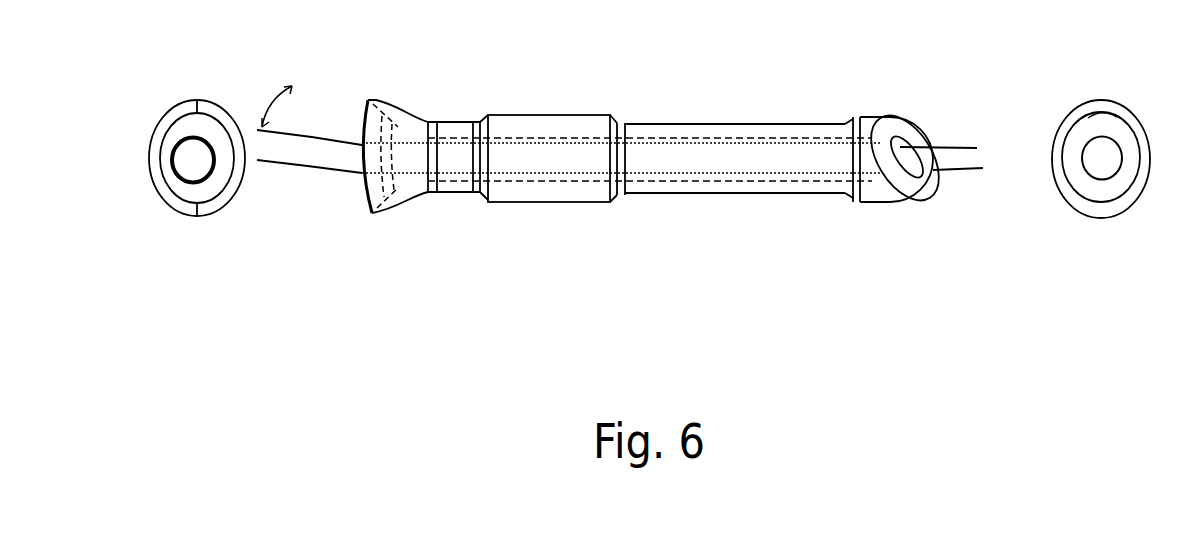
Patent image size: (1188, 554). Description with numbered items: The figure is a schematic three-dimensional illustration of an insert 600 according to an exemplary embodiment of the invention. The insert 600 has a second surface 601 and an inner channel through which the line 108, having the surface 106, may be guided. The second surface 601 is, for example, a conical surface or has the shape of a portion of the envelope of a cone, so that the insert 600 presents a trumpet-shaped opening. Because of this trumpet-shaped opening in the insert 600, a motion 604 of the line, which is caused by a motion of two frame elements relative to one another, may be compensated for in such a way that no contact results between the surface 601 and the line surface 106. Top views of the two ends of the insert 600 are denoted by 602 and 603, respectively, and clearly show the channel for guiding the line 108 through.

The insert 600 is at (720, 124).
The second surface 601 is at (394, 117).
The top view of one end of the insert 602 is at (177, 217).
The top view of the other end of the insert 603 is at (1090, 218).
The motion of the line 604 is at (268, 104).
The surface of the line 106 is at (307, 157).
The line 108 is at (957, 145).